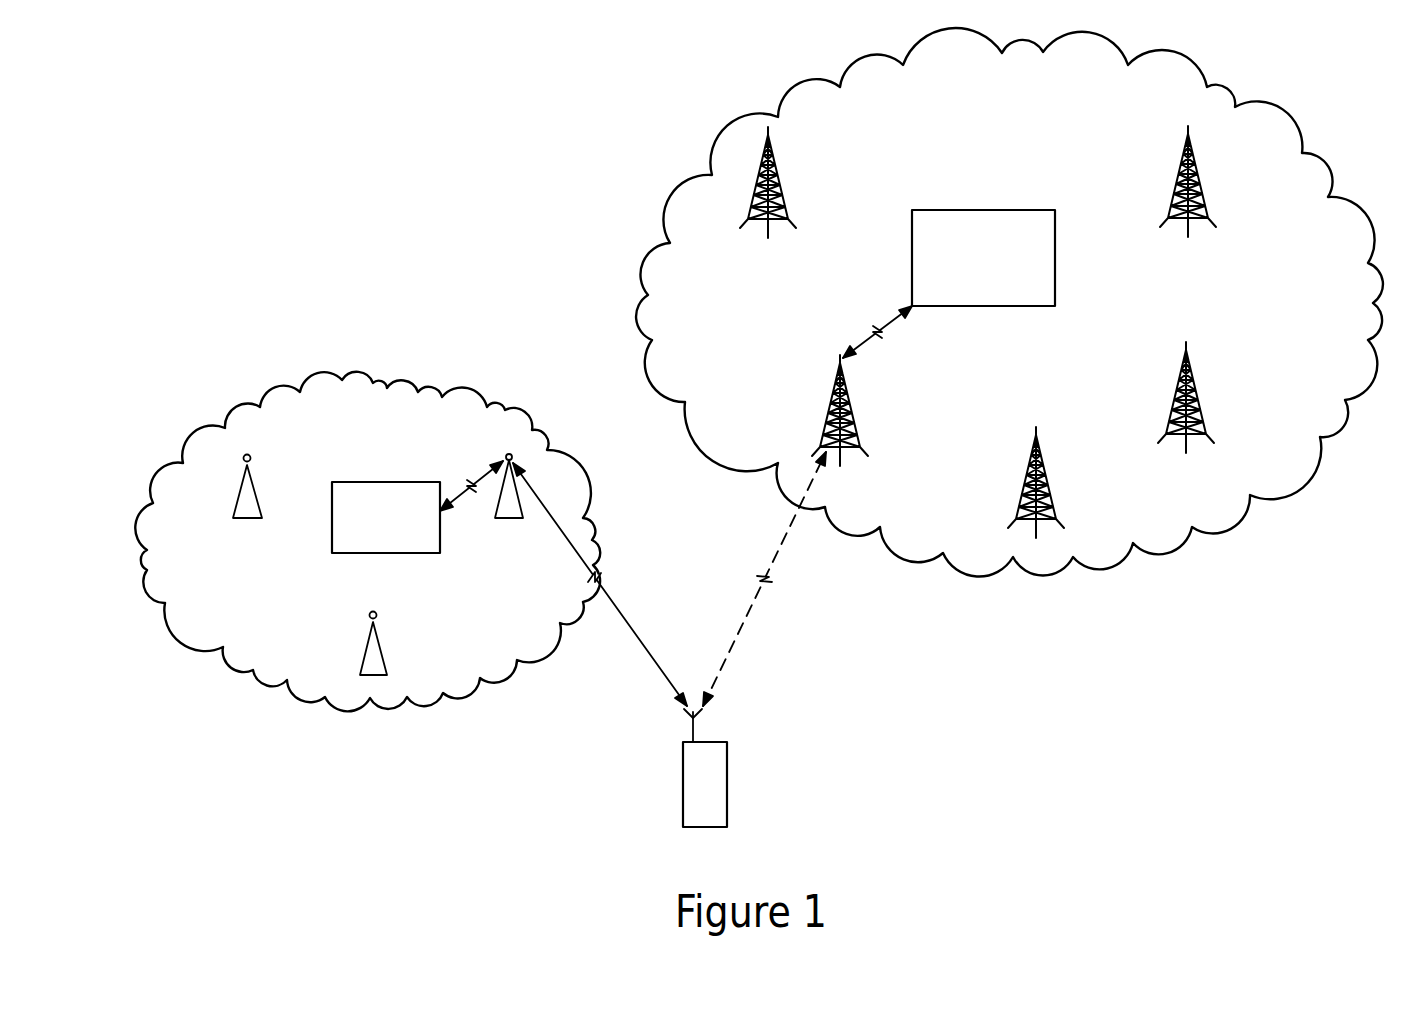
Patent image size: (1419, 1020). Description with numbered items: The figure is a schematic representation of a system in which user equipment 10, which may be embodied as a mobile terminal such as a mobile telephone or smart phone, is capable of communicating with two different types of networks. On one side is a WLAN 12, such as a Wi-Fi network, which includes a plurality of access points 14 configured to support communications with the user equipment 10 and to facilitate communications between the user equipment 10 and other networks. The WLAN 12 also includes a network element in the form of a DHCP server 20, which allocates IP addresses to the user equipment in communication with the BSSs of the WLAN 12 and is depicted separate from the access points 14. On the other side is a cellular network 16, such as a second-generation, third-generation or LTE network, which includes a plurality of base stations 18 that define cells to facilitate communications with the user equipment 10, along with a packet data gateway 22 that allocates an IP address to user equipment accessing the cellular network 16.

The user equipment 10 is at (738, 768).
The WLAN 12 is at (367, 524).
The access points 14 is at (378, 561).
The cellular network 16 is at (1009, 295).
The base stations 18 is at (1003, 332).
The DHCP server 20 is at (393, 496).
The packet data gateway 22 is at (988, 238).